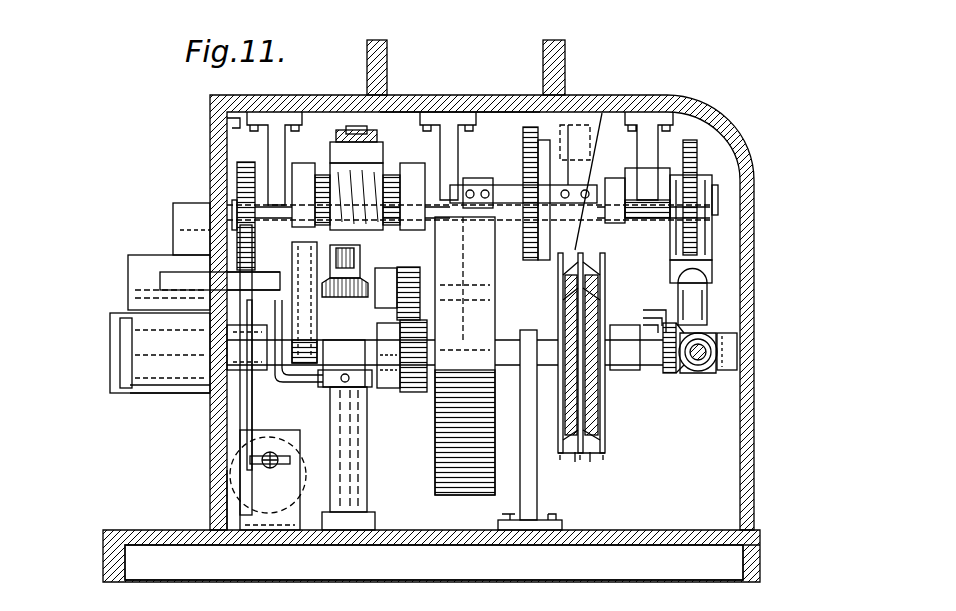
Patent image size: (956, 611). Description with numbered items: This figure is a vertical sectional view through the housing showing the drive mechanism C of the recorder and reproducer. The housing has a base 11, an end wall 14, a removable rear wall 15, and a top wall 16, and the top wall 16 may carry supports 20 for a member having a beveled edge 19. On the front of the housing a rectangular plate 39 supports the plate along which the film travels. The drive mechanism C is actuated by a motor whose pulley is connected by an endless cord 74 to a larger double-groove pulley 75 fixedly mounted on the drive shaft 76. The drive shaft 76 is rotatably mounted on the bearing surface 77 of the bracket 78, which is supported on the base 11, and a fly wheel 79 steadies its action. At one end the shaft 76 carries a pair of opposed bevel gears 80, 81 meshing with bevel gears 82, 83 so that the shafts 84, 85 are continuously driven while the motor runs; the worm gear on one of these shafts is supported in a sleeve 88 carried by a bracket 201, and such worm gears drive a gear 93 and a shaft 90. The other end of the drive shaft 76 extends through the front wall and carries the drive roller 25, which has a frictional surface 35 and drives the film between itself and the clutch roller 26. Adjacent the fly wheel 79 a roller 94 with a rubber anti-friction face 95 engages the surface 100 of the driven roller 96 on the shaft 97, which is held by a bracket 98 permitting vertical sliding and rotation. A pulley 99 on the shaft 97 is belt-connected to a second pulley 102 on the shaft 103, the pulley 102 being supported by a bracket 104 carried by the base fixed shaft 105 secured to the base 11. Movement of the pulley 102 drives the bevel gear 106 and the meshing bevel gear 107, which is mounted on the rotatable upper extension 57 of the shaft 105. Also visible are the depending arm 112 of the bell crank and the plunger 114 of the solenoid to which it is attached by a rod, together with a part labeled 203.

The base 11 is at (618, 530).
The removable rear wall 15 is at (755, 465).
The top wall 16 is at (478, 96).
The end wall 14 is at (230, 124).
The rectangular plate 39 is at (212, 482).
The supports 20 is at (388, 60).
The beveled edge 19 is at (493, 274).
The drive roller 25 is at (110, 372).
The clutch roller 26 is at (128, 280).
The frictional surface 35 is at (180, 388).
The rotatable upper extension 57 is at (360, 228).
The endless cord 74 is at (592, 460).
The pulley 75 is at (603, 280).
The drive shaft 76 is at (276, 358).
The bearing surface 77 is at (548, 336).
The bracket 78 is at (538, 490).
The fly wheel 79 is at (465, 356).
The bevel gear 80 is at (668, 376).
The bevel gear 81 is at (718, 334).
The bevel gear 82 is at (670, 312).
The bevel gear 83 is at (700, 372).
The shaft 84 is at (708, 300).
The shaft 85 is at (686, 376).
The sleeve 88 is at (712, 270).
The shaft 90 is at (722, 195).
The gear 93 is at (694, 157).
The roller 94 is at (390, 390).
The anti-friction face 95 is at (414, 394).
The driven roller 96 is at (414, 232).
The shaft 97 is at (392, 228).
The bracket 98 is at (338, 232).
The pulley 99 is at (292, 256).
The surface 100 is at (420, 280).
The pulley 102 is at (318, 390).
The shaft 103 is at (278, 300).
The bracket 104 is at (290, 384).
The base fixed shaft 105 is at (368, 450).
The bevel gear 106 is at (318, 280).
The bevel gear 107 is at (345, 300).
The depending arm 112 is at (248, 425).
The plunger 114 is at (270, 451).
The bracket 201 is at (712, 222).
The cam 203 is at (268, 475).
The drive mechanism C is at (616, 418).